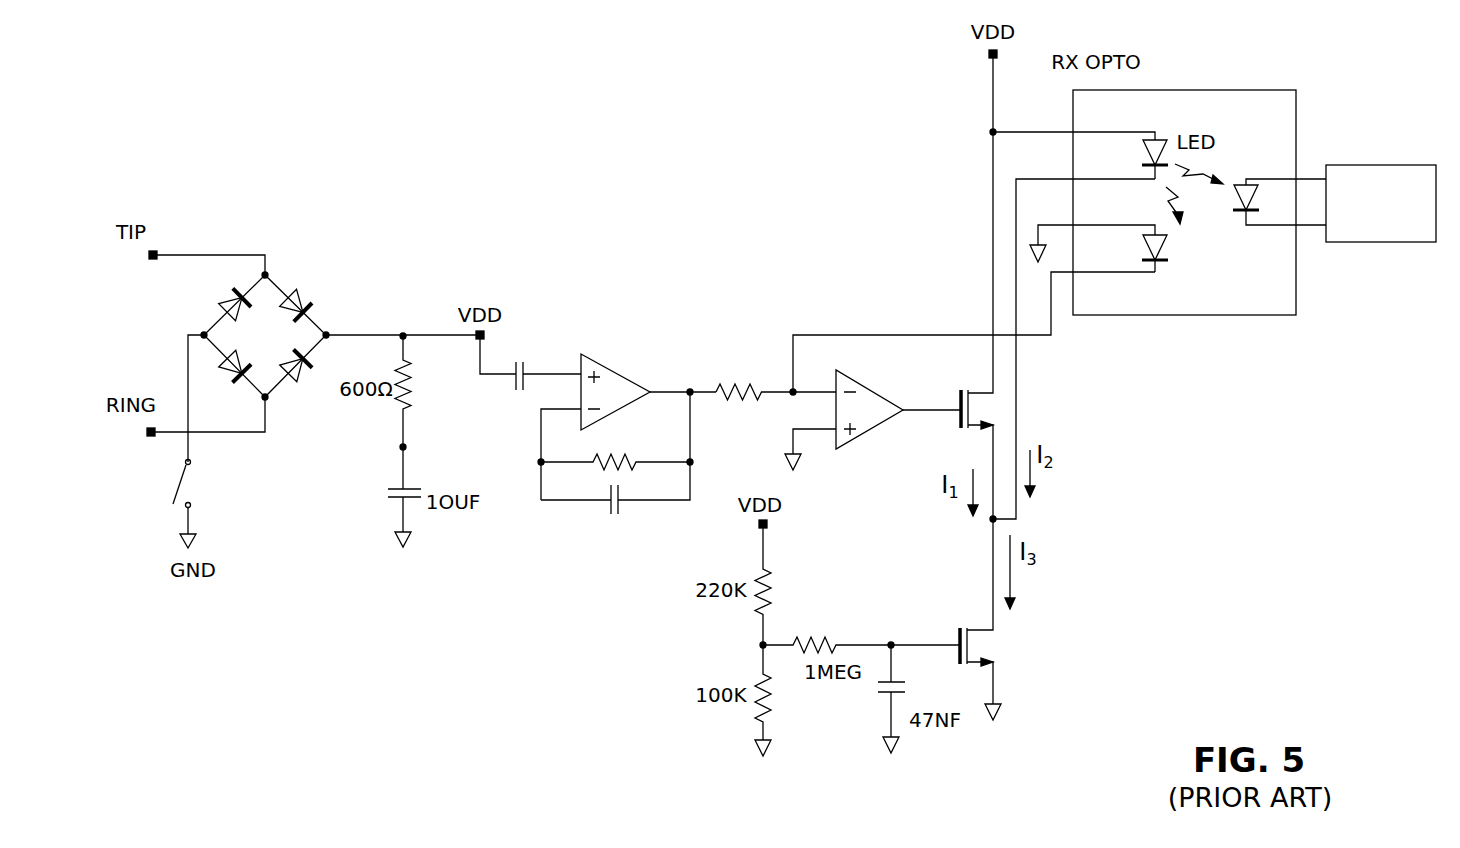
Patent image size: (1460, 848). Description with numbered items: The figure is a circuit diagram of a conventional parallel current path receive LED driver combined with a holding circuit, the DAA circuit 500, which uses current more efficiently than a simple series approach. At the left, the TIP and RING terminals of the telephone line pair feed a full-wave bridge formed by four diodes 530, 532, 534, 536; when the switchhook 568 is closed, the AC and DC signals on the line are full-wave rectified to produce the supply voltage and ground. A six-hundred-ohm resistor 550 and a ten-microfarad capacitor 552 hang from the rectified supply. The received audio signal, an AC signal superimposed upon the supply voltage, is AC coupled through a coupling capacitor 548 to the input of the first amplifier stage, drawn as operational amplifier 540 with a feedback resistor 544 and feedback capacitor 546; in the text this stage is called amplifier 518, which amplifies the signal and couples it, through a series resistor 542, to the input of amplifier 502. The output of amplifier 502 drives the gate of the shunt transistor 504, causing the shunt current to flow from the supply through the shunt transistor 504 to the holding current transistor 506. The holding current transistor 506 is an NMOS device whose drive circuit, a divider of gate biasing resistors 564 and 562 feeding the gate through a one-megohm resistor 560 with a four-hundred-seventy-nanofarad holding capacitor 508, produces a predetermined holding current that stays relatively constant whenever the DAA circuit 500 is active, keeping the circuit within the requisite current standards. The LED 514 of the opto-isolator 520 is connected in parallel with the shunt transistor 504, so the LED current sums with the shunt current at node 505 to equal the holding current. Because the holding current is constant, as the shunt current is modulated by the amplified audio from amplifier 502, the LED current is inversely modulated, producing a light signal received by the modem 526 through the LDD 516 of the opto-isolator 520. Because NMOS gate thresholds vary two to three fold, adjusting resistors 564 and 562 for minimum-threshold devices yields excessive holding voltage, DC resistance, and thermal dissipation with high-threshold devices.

The DAA circuit 500 is at (302, 79).
The bridge diode 530 is at (221, 297).
The bridge diode 532 is at (302, 286).
The bridge diode 534 is at (301, 389).
The bridge diode 536 is at (236, 379).
The switchhook 568 is at (191, 496).
The 600 ohm resistor 550 is at (420, 385).
The 10 uF capacitor 552 is at (415, 486).
The coupling capacitor 548 is at (524, 361).
The operational amplifier 540 is at (606, 363).
The feedback resistor 544 is at (625, 456).
The feedback capacitor 546 is at (619, 515).
The resistor 542 is at (736, 380).
The amplifier 502 is at (864, 391).
The shunt transistor 504 is at (958, 387).
The node 505 is at (987, 519).
The holding current transistor 506 is at (951, 626).
The 1 MEG resistor 560 is at (818, 633).
The gate biasing resistor 564 is at (769, 584).
The gate biasing resistor 562 is at (770, 695).
The 47 nF capacitor 508 is at (880, 690).
The LED 514 is at (1158, 140).
The LDD 516 is at (1239, 214).
The amplifier 518 is at (1156, 262).
The opto-isolator 520 is at (1268, 88).
The modem 526 is at (1367, 163).